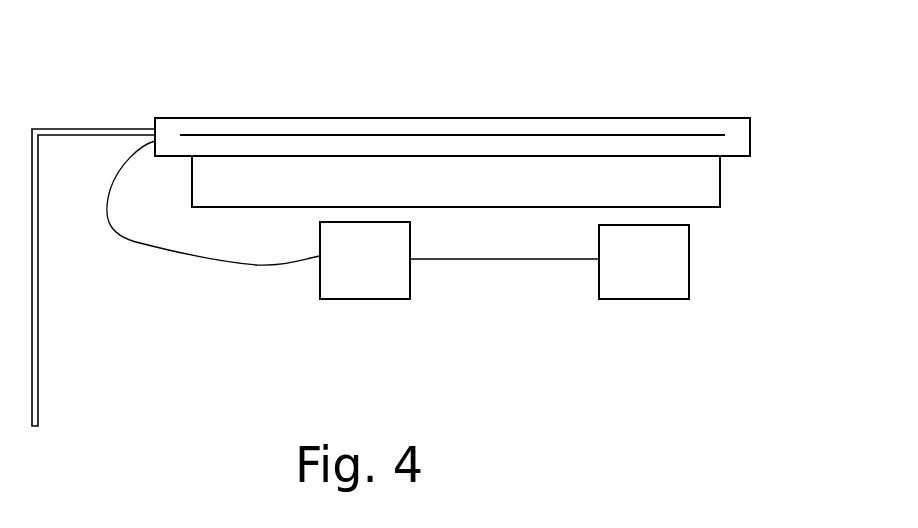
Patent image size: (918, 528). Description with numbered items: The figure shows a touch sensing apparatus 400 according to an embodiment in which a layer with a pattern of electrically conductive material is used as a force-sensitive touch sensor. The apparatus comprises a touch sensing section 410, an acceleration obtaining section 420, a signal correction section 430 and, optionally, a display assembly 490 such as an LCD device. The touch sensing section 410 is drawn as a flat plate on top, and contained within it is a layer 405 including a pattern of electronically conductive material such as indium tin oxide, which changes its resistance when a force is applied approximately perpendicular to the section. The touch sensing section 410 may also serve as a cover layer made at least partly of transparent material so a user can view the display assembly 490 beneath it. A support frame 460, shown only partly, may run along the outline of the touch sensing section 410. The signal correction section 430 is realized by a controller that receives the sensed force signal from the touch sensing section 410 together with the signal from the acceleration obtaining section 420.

The touch sensing apparatus 400 is at (323, 94).
The layer 405 is at (689, 136).
The touch sensing section 410 is at (750, 139).
The display assembly 490 is at (720, 182).
The signal correction section 430 is at (383, 271).
The acceleration obtaining section 420 is at (663, 272).
The support frame 460 is at (38, 383).